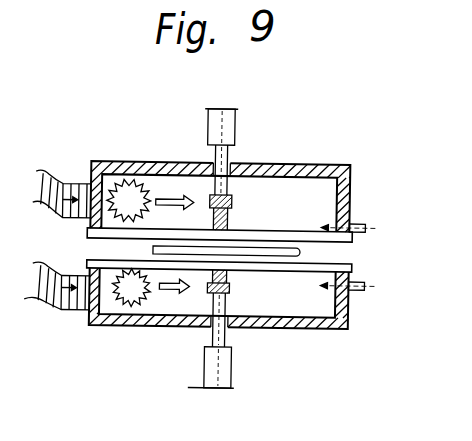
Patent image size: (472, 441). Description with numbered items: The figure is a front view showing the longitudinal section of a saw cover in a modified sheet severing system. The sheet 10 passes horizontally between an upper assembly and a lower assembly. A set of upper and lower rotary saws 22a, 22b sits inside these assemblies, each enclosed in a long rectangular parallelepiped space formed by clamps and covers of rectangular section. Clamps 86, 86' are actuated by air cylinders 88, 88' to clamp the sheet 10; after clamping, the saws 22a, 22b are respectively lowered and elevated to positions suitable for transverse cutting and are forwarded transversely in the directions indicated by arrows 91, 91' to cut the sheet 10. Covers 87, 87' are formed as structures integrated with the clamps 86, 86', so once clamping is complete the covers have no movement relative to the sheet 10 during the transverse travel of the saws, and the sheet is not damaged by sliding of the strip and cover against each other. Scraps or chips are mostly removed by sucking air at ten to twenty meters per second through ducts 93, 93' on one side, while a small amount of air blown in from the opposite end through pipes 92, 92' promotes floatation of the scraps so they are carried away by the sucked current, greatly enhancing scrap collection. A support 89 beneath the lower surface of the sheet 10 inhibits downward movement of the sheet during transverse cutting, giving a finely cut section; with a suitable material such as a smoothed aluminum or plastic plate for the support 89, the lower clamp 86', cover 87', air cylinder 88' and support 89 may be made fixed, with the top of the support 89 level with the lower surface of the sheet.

The sheet 10 is at (300, 249).
The upper rotary saw 22a is at (128, 180).
The lower rotary saw 22b is at (135, 305).
The clamp 86 is at (220, 221).
The clamp 86' is at (218, 288).
The cover 87 is at (220, 180).
The cover 87' is at (218, 326).
The air cylinder 88 is at (228, 155).
The air cylinder 88' is at (211, 350).
The support 89 is at (345, 262).
The arrow 91 is at (173, 194).
The arrow 91' is at (167, 330).
The pipe 92 is at (363, 224).
The pipe 92' is at (365, 292).
The duct 93 is at (61, 180).
The duct 93' is at (55, 310).